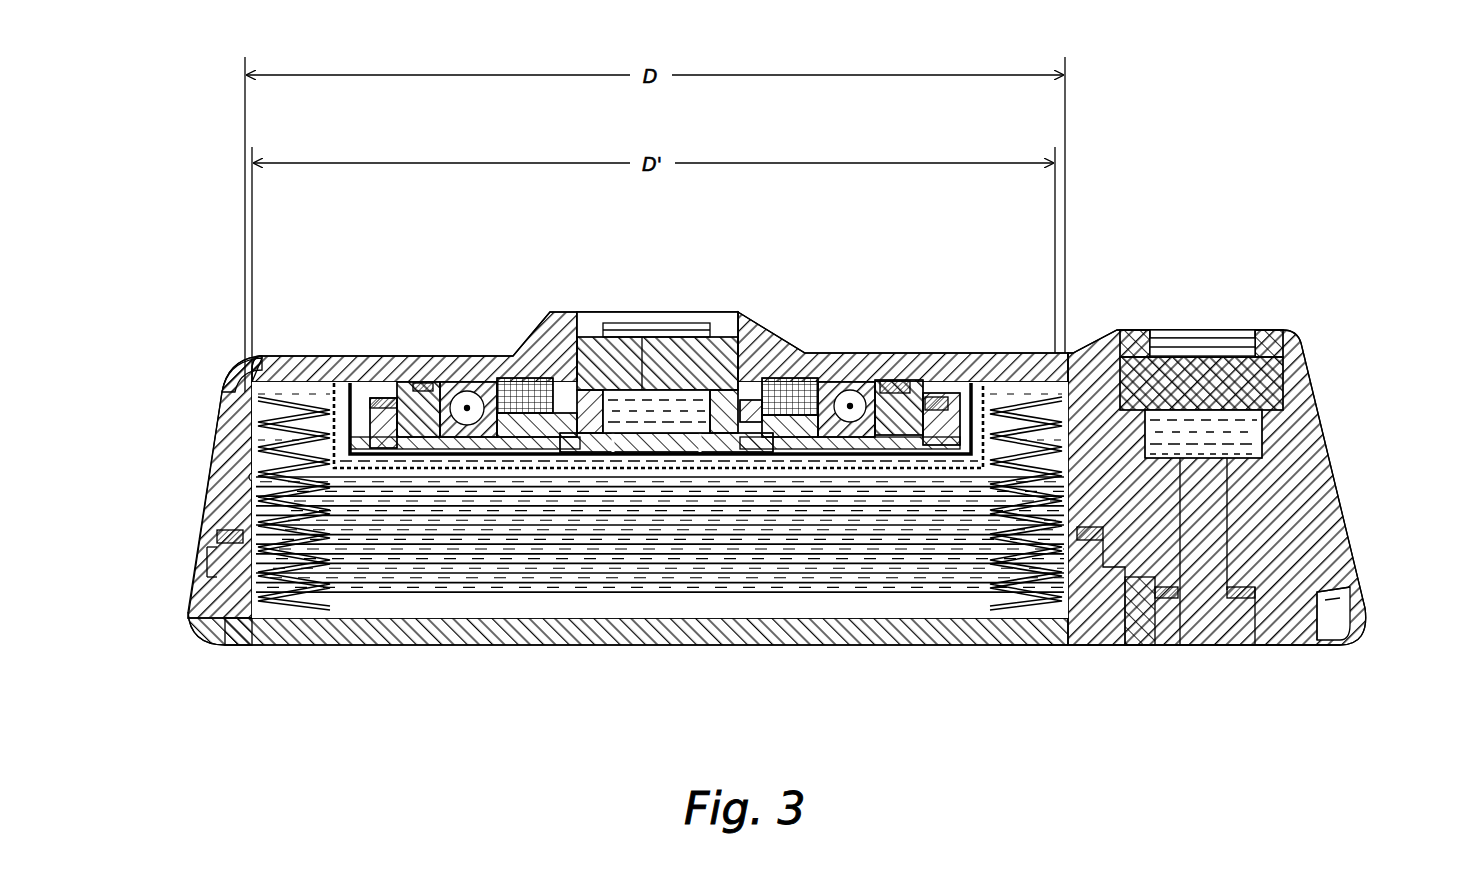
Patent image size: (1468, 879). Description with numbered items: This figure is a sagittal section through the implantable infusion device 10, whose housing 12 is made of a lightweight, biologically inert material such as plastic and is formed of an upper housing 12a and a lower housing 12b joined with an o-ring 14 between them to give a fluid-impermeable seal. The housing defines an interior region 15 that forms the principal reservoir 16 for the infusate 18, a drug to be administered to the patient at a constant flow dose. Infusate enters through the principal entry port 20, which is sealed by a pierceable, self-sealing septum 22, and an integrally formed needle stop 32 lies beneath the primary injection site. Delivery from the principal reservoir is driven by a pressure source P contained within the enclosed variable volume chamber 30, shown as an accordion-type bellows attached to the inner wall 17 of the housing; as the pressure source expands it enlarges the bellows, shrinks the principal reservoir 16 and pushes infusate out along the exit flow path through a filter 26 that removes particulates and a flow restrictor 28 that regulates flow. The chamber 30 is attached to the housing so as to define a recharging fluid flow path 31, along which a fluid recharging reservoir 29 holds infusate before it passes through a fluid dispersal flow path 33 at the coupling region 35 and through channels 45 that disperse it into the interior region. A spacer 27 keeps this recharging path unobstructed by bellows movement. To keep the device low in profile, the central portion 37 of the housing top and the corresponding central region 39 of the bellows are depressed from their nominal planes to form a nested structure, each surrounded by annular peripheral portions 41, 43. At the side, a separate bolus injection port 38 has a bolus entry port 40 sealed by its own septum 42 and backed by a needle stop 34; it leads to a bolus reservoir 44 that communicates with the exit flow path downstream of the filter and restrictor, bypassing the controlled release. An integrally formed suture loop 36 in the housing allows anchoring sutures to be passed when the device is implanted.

The device 10 is at (1218, 215).
The housing 12 is at (212, 478).
The upper housing 12a is at (233, 388).
The lower housing 12b is at (185, 607).
The o-ring 14 is at (217, 537).
The interior region 15 is at (1087, 377).
The principal reservoir 16 is at (918, 618).
The inner wall 17 is at (226, 492).
The infusate 18 is at (1030, 620).
The principal entry port 20 is at (602, 312).
The septum 22 is at (712, 388).
The filter 26 is at (410, 385).
The spacer 27 is at (842, 378).
The flow restrictor 28 is at (527, 377).
The fluid recharging reservoir 29 is at (672, 392).
The variable volume chamber 30 is at (400, 607).
The recharging fluid flow path 31 is at (740, 320).
The needle stop 32 is at (647, 326).
The fluid dispersal flow path 33 is at (768, 420).
The needle stop 34 is at (1247, 437).
The coupling region 35 is at (492, 392).
The suture loop 36 is at (1353, 603).
The central portion 37 is at (356, 396).
The bolus injection port 38 is at (1268, 322).
The central region 39 is at (440, 483).
The bolus entry port 40 is at (1158, 338).
The annular peripheral portion 41 is at (300, 366).
The septum 42 is at (1200, 360).
The annular peripheral region 43 is at (265, 432).
The bolus reservoir 44 is at (1220, 455).
The channels 45 is at (274, 385).
The pressure source P is at (672, 570).